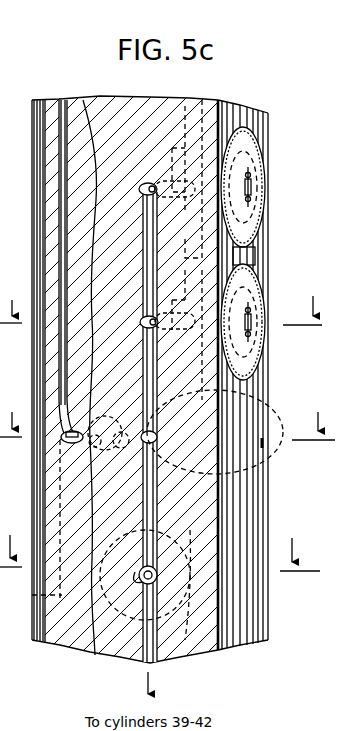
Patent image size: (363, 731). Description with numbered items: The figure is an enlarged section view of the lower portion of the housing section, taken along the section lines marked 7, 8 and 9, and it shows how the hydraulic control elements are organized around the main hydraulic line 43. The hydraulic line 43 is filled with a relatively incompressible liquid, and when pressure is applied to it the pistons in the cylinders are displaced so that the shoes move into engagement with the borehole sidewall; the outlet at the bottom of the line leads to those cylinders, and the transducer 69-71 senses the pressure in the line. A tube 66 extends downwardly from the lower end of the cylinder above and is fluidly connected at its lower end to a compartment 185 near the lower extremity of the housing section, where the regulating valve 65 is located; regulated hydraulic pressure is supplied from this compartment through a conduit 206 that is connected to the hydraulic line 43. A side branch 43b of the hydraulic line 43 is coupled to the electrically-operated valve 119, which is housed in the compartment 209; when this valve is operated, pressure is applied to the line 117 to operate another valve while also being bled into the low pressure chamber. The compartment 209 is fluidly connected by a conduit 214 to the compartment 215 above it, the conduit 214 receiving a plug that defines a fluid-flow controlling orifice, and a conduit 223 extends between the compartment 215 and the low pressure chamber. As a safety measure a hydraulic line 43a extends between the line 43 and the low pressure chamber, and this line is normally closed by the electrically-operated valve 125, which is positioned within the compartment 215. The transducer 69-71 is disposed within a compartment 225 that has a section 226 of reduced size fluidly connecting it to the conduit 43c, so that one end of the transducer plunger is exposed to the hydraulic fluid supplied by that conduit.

The tube 66 is at (63, 103).
The conduit 223 is at (214, 102).
The hydraulic line 43 is at (148, 370).
The hydraulic line 43a is at (143, 186).
The side branch of hydraulic line 43b is at (143, 322).
The conduit 43c is at (168, 562).
The conduit 206 is at (145, 443).
The section of reduced size 226 is at (123, 573).
The compartment 215 is at (268, 150).
The electrically-operated valve 125 is at (262, 194).
The conduit 214 is at (268, 248).
The compartment 209 is at (268, 353).
The electrically-operated valve 119 is at (258, 320).
The compartment 185 is at (262, 385).
The regulating valve 65 is at (262, 442).
The compartment 225 is at (270, 546).
The hydraulic line 117 is at (228, 657).
The transducer 69-71 is at (170, 666).
The section line 7 is at (166, 311).
The section line 8 is at (167, 426).
The section line 9 is at (160, 553).